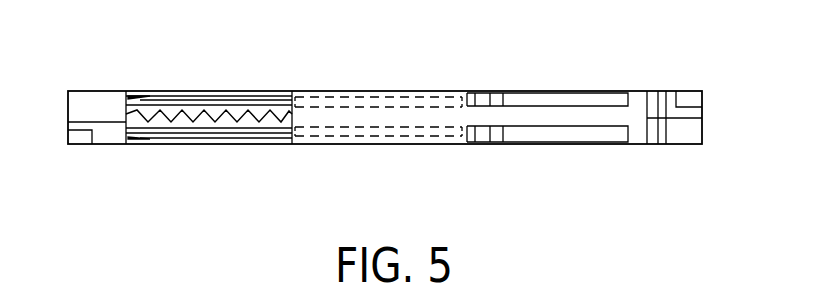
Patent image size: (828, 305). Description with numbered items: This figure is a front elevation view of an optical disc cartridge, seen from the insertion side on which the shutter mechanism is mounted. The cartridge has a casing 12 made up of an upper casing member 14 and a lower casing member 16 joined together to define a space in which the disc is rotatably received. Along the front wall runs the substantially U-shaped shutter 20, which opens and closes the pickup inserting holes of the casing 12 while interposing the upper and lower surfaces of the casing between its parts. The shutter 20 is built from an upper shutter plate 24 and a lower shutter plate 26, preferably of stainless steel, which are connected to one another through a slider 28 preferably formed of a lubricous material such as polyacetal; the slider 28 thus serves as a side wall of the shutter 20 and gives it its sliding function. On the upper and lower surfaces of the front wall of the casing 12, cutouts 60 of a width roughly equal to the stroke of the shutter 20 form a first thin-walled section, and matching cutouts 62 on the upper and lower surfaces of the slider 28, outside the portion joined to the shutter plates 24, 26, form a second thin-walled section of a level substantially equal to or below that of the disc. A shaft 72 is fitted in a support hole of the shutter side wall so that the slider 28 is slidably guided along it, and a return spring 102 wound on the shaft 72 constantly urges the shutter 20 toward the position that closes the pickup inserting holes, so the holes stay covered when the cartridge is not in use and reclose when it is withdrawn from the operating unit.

The casing 12 is at (678, 86).
The upper casing member 14 is at (92, 110).
The lower casing member 16 is at (694, 130).
The shutter 20 is at (463, 87).
The upper shutter plate 24 is at (362, 91).
The lower shutter plate 26 is at (348, 139).
The slider 28 is at (408, 118).
The cutouts 60 is at (315, 103).
The cutouts 62 is at (593, 99).
The shaft 72 is at (227, 122).
The return spring 102 is at (170, 122).